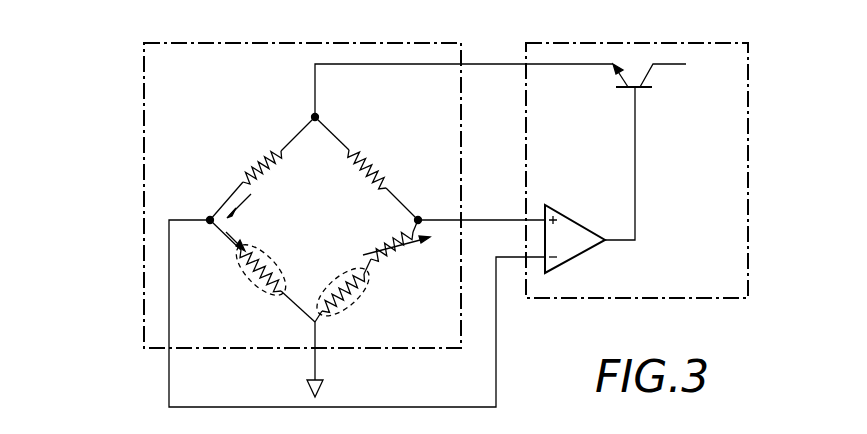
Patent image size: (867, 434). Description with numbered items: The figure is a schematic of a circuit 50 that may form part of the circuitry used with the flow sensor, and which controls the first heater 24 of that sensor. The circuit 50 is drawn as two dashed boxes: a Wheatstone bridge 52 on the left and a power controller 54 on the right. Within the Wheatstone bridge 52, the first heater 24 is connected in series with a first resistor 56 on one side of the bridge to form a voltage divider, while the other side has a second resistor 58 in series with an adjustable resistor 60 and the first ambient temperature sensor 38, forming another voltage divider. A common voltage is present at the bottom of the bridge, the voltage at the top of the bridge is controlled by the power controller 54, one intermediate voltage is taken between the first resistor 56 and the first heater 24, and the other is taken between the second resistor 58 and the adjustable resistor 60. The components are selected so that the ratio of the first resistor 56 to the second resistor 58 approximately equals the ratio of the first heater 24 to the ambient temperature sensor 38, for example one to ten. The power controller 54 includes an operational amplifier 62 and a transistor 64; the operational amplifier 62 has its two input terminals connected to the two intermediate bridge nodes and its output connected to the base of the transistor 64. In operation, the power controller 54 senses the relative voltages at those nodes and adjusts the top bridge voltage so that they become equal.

The circuit 50 is at (100, 62).
The Wheatstone bridge 52 is at (144, 196).
The power controller 54 is at (750, 78).
The first resistor 56 is at (272, 155).
The second resistor 58 is at (354, 170).
The adjustable resistor 60 is at (395, 238).
The first heater 24 is at (276, 268).
The first ambient temperature sensor 38 is at (361, 290).
The operational amplifier 62 is at (558, 208).
The transistor 64 is at (648, 88).